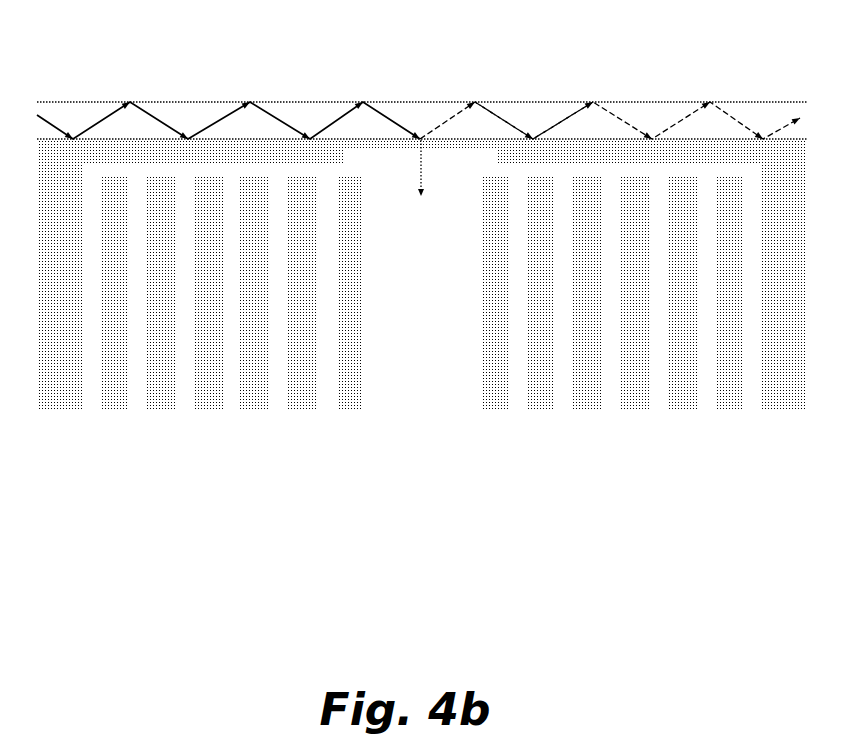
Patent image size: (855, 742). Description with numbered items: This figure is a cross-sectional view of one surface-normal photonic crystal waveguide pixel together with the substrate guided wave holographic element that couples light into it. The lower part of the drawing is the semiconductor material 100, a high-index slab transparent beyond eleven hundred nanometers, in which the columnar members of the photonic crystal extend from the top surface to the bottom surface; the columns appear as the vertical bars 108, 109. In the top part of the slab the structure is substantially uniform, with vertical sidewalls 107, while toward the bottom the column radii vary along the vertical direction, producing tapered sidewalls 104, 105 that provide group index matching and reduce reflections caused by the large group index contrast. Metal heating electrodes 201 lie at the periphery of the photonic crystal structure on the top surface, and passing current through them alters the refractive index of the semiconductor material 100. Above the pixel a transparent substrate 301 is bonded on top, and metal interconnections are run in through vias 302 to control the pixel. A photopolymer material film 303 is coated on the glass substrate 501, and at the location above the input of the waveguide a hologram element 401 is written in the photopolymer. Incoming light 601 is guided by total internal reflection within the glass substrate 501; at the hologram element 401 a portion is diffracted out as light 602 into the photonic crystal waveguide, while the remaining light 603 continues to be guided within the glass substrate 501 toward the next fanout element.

The semiconductor material 100 is at (62, 403).
The tapered sidewall 104 is at (480, 397).
The tapered sidewall 105 is at (368, 397).
The vertical sidewall 107 is at (363, 313).
The trench 108 is at (227, 403).
The pillar 109 is at (192, 403).
The metal heating electrode 201 is at (72, 168).
The transparent substrate 301 is at (268, 153).
The via 302 is at (790, 158).
The photopolymer material film 303 is at (606, 148).
The holographic element 401 is at (395, 143).
The glass substrate 501 is at (536, 111).
The incoming light 601 is at (163, 121).
The diffracted light 602 is at (422, 178).
The remaining light 603 is at (426, 138).